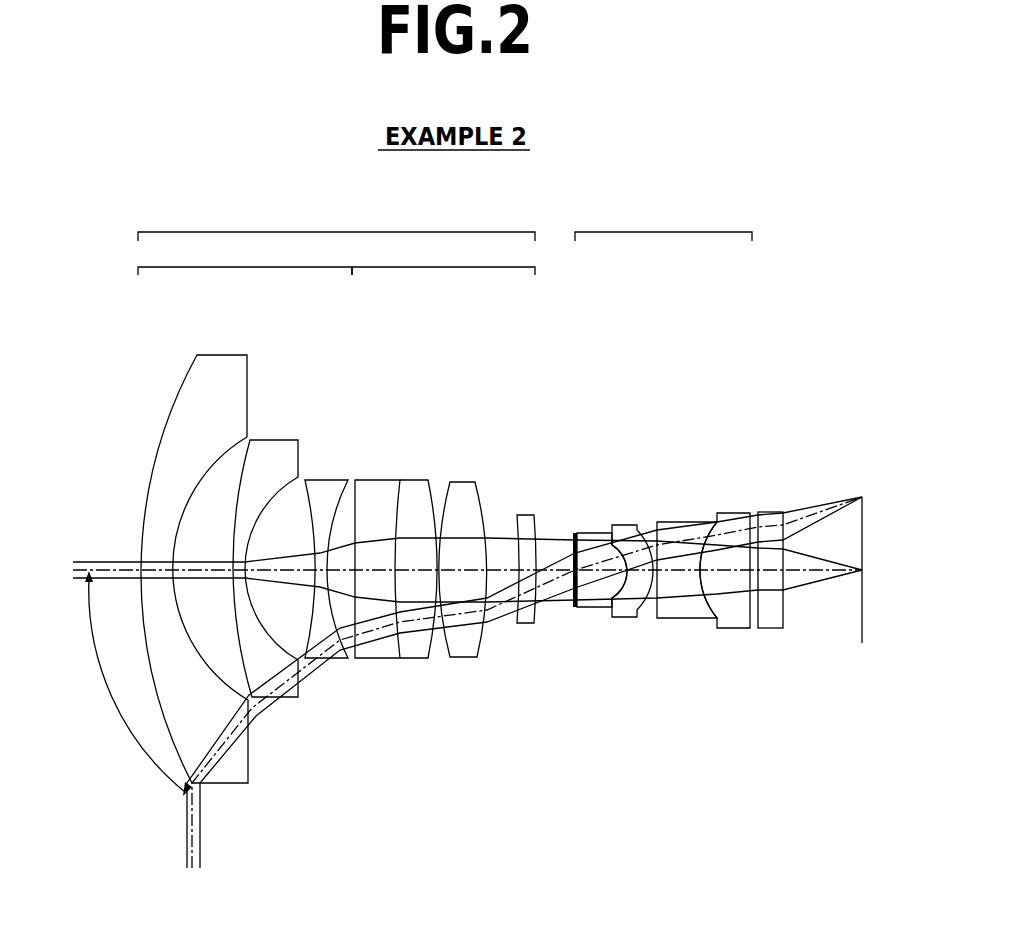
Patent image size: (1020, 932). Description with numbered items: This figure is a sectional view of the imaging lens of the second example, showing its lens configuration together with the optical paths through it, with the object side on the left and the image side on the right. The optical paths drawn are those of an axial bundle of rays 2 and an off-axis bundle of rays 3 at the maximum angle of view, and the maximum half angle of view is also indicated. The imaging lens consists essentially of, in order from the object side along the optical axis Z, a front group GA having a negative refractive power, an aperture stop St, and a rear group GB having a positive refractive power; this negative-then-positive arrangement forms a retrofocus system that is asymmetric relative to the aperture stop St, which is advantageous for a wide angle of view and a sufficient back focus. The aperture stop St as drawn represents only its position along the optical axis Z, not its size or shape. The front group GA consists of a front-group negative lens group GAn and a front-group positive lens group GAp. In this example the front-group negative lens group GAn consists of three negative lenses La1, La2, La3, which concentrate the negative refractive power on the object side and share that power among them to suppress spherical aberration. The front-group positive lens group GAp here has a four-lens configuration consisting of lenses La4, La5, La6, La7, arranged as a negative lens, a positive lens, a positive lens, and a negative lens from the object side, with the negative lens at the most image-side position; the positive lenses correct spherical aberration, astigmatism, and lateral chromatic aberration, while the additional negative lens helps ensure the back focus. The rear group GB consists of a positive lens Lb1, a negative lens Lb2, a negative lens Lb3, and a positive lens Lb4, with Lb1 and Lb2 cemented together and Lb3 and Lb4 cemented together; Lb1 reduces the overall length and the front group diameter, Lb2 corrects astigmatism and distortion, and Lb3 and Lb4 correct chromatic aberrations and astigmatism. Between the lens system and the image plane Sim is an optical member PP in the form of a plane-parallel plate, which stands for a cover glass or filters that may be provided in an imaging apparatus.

The front group GA is at (336, 223).
The front-group negative lens group GAn is at (245, 258).
The front-group positive lens group GAp is at (443, 258).
The rear group GB is at (663, 223).
The negative lens La1 is at (228, 355).
The negative lens La2 is at (280, 440).
The negative lens La3 is at (325, 480).
The lens La4 is at (379, 480).
The lens La5 is at (422, 480).
The lens La6 is at (465, 482).
The lens La7 is at (528, 515).
The aperture stop St is at (573, 533).
The positive lens Lb1 is at (600, 533).
The negative lens Lb2 is at (628, 525).
The negative lens Lb3 is at (687, 522).
The positive lens Lb4 is at (733, 513).
The optical member PP is at (778, 512).
The image plane Sim is at (862, 643).
The optical axis Z is at (113, 566).
The axial bundle of rays 2 is at (72, 547).
The off-axis bundle of rays 3 is at (215, 868).